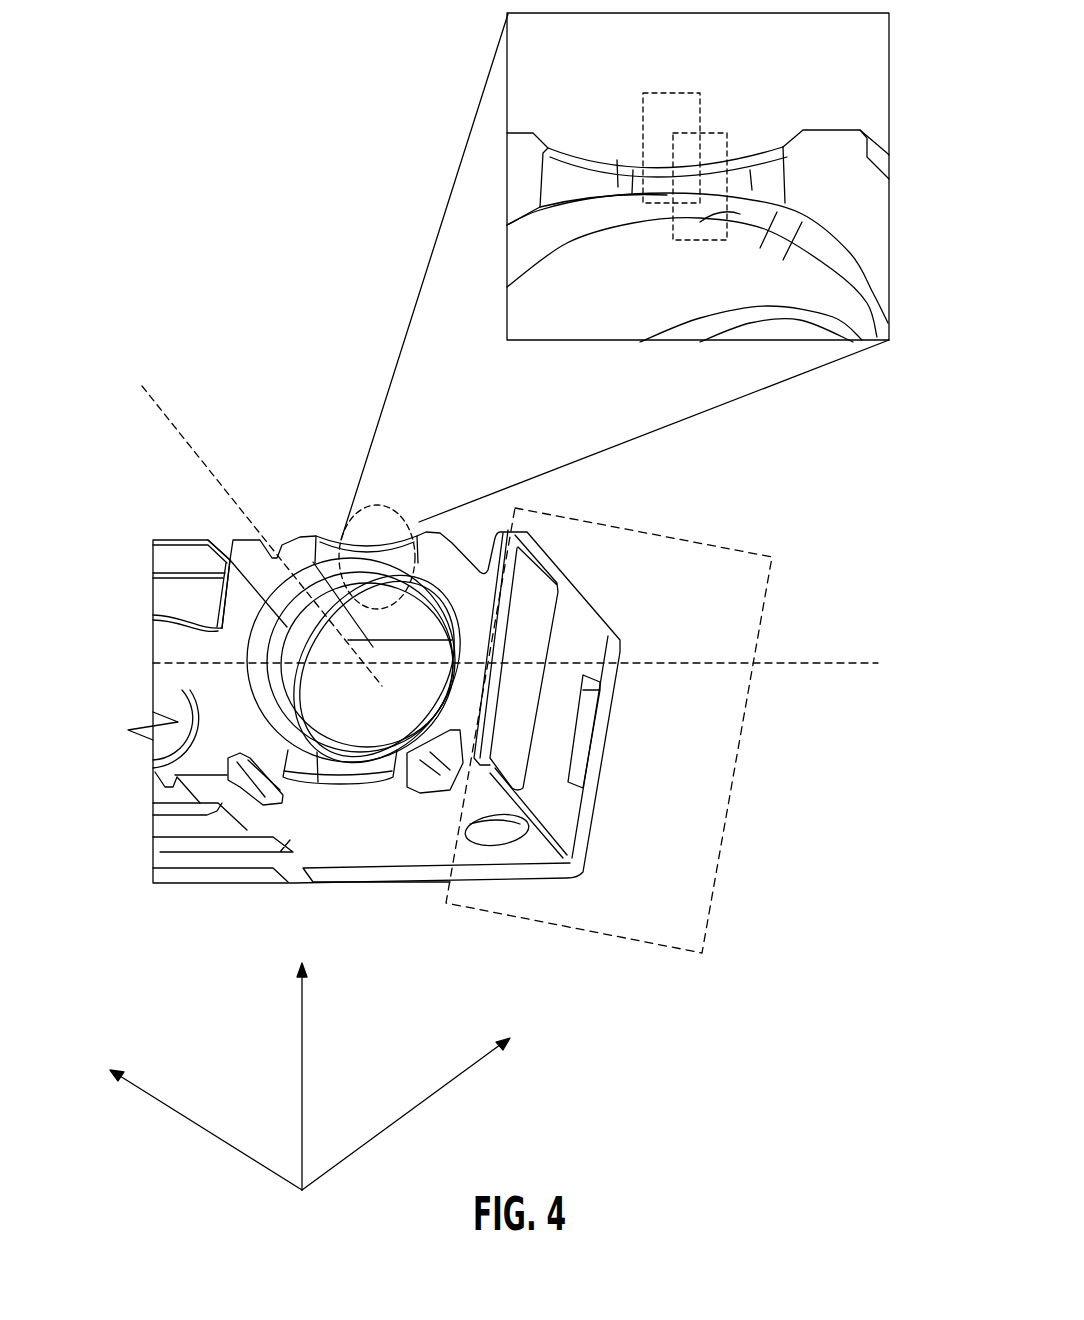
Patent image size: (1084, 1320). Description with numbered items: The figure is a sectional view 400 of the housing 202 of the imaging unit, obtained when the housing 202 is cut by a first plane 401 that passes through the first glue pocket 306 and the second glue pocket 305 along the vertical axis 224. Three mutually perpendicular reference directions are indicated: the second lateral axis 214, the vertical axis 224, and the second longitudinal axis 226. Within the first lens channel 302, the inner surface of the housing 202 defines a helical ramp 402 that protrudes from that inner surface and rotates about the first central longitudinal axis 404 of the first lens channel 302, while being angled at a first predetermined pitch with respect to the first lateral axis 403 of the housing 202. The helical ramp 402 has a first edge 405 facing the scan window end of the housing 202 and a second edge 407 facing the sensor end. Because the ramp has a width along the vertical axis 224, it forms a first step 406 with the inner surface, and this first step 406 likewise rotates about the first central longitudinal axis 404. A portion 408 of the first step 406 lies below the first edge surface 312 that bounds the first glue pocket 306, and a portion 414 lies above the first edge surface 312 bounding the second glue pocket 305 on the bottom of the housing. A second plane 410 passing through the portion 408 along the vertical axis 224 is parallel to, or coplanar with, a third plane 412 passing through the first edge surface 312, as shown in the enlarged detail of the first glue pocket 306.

The sectional view 400 is at (357, 132).
The first glue pocket 306 is at (503, 38).
The first central longitudinal axis 404 is at (196, 440).
The first edge 405 is at (230, 558).
The first lens channel 302 is at (330, 540).
The helical ramp 402 is at (278, 567).
The second edge 407 is at (303, 697).
The first lateral axis 403 is at (815, 660).
The first plane 401 is at (605, 895).
The portion of the first step 414 is at (300, 768).
The first edge surface 312 is at (617, 180).
The housing 202 is at (343, 850).
The second glue pocket 305 is at (357, 770).
The first step 406 is at (610, 237).
The portion of the first step 408 is at (710, 220).
The second plane 410 is at (720, 133).
The third plane 412 is at (670, 93).
The vertical axis 224 is at (300, 1033).
The second longitudinal axis 226 is at (208, 1127).
The second lateral axis 214 is at (432, 1093).